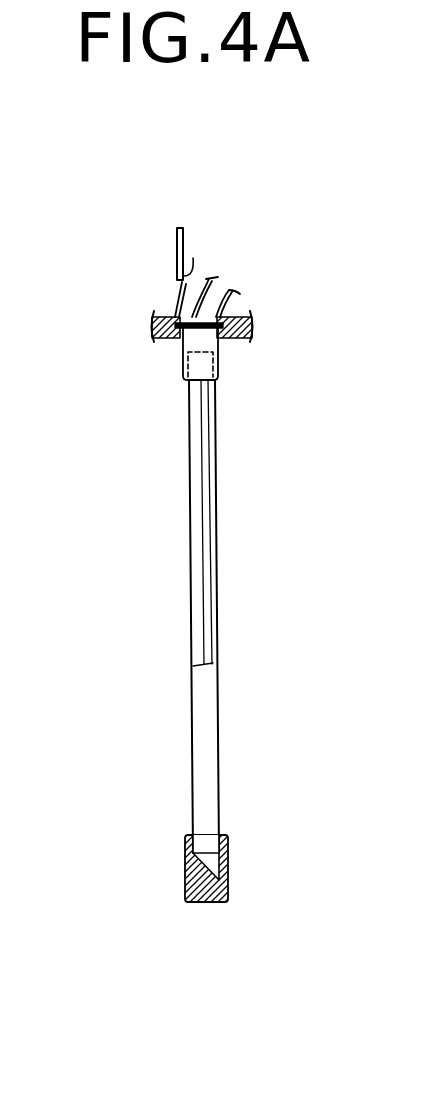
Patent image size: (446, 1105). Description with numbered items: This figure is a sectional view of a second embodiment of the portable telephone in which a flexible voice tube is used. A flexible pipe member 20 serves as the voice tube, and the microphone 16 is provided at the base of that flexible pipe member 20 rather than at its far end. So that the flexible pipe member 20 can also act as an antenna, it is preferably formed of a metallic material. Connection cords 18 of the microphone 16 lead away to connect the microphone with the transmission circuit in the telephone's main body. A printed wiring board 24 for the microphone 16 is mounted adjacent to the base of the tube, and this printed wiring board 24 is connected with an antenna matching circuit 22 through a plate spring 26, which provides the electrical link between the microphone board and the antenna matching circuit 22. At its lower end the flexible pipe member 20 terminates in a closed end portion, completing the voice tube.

The microphone 16 is at (222, 349).
The connection cords 18 is at (226, 289).
The flexible pipe member 20 is at (217, 567).
The antenna matching circuit 22 is at (175, 240).
The printed wiring board 24 is at (190, 340).
The plate spring 26 is at (176, 308).